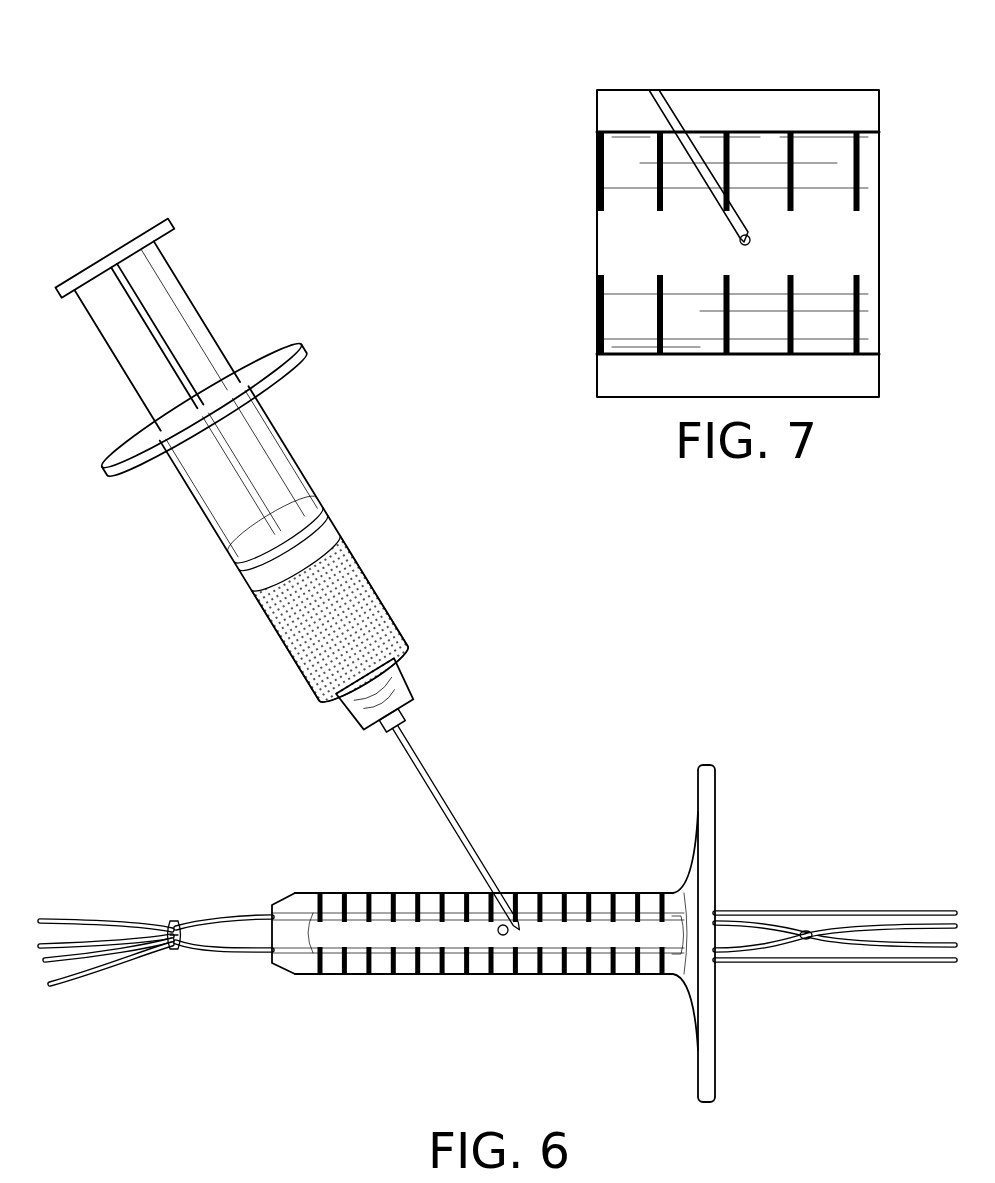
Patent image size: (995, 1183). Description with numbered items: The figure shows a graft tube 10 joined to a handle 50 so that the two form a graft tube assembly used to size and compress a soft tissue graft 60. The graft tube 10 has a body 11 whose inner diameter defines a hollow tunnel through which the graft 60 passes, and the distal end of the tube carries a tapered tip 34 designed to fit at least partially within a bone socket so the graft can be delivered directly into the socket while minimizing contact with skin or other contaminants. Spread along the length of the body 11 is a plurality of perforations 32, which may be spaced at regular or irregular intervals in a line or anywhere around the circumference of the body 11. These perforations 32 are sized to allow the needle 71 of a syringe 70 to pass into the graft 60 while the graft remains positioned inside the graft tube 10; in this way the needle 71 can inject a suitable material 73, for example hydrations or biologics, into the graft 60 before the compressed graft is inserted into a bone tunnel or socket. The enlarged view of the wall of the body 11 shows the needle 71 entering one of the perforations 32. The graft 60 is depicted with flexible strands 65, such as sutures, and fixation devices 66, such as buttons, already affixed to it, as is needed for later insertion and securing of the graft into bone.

In FIG. 6, the graft tube 10 is at (474, 963).
In FIG. 7, the body 11 is at (824, 332).
In FIG. 6, the perforations 32 is at (507, 938).
In FIG. 7, the perforations 32 is at (748, 234).
In FIG. 6, the tapered tip 34 is at (279, 976).
In FIG. 6, the handle 50 is at (704, 1076).
In FIG. 6, the graft 60 is at (370, 931).
In FIG. 6, the flexible strands 65 is at (863, 946).
In FIG. 6, the fixation devices 66 is at (173, 921).
In FIG. 6, the syringe 70 is at (315, 592).
In FIG. 6, the needle 71 is at (456, 828).
In FIG. 7, the needle 71 is at (676, 123).
In FIG. 6, the material 73 is at (332, 622).